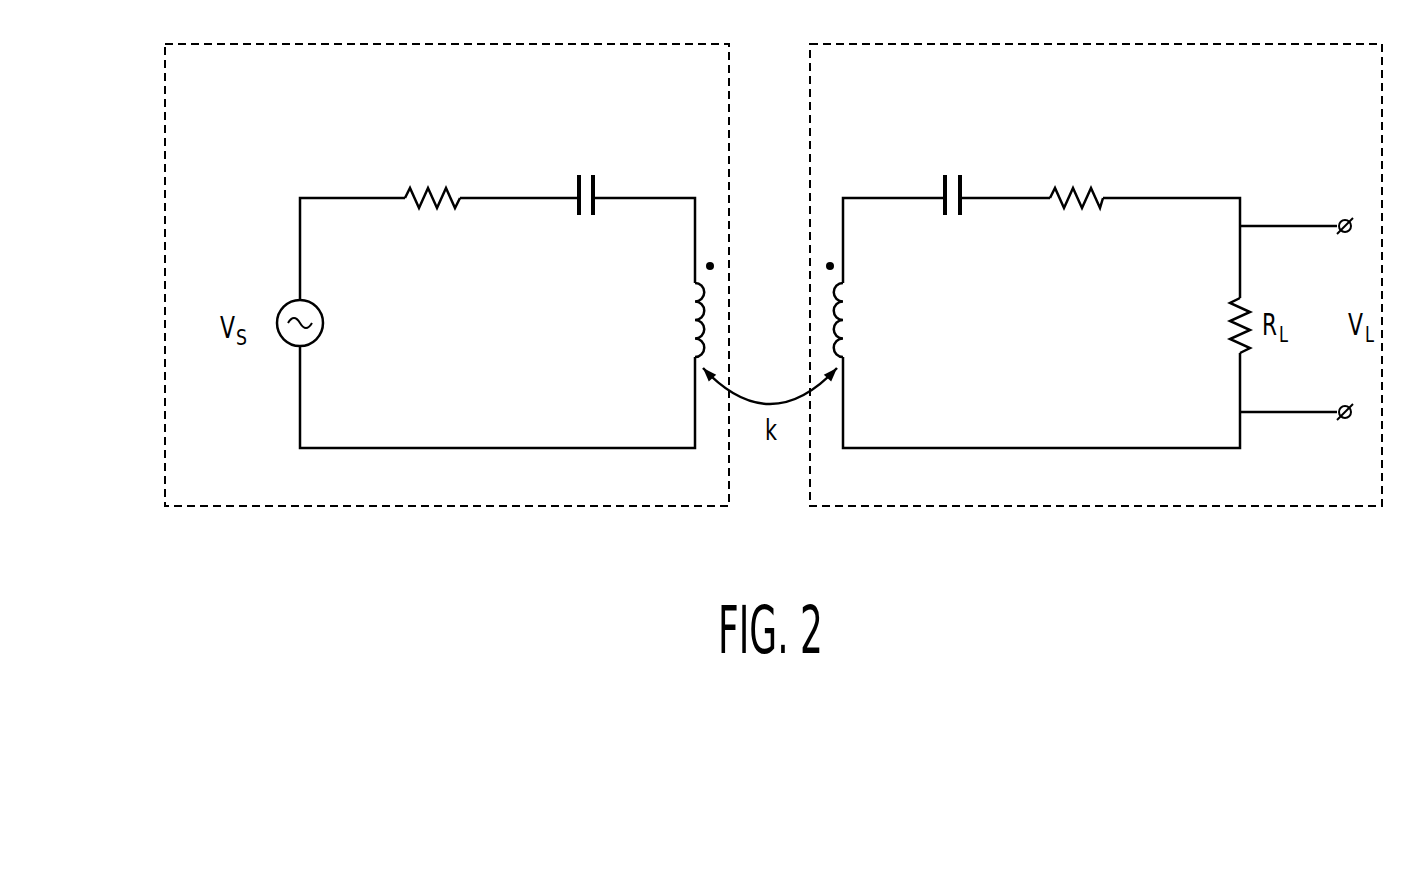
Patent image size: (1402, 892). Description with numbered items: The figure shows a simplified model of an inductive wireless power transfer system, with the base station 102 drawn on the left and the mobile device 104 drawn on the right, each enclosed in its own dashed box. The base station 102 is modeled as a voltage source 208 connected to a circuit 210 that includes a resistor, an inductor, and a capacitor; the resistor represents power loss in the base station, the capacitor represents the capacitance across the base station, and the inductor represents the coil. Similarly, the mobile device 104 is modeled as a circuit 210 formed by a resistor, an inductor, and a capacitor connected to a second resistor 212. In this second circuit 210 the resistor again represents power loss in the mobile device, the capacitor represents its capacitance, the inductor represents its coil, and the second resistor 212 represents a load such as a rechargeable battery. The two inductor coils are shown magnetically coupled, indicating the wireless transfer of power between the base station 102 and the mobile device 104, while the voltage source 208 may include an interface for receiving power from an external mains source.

The base station 102 is at (368, 506).
The mobile device 104 is at (1283, 506).
The voltage source 208 is at (281, 304).
The circuit 210 is at (710, 130).
The second resistor 212 is at (1252, 303).